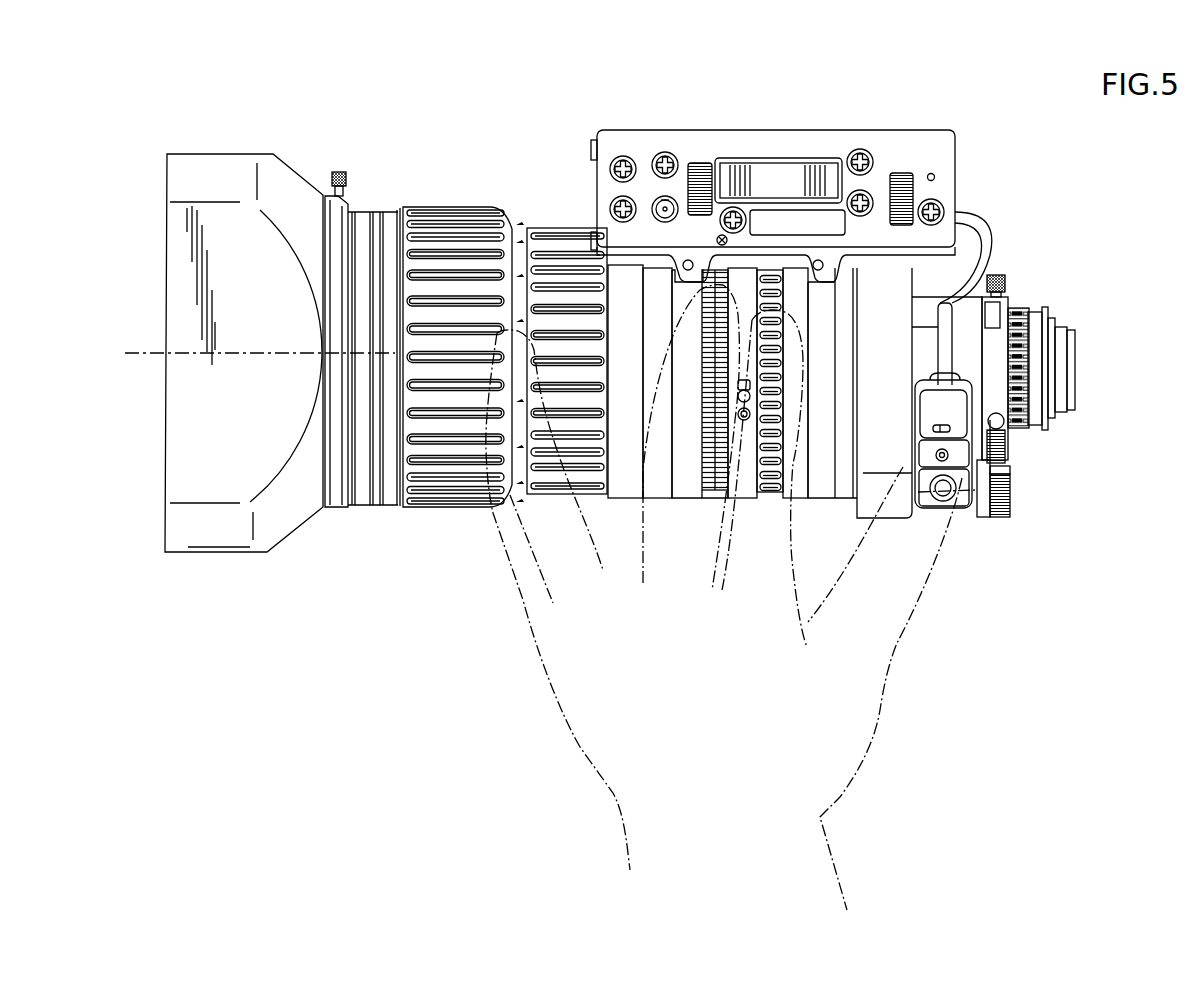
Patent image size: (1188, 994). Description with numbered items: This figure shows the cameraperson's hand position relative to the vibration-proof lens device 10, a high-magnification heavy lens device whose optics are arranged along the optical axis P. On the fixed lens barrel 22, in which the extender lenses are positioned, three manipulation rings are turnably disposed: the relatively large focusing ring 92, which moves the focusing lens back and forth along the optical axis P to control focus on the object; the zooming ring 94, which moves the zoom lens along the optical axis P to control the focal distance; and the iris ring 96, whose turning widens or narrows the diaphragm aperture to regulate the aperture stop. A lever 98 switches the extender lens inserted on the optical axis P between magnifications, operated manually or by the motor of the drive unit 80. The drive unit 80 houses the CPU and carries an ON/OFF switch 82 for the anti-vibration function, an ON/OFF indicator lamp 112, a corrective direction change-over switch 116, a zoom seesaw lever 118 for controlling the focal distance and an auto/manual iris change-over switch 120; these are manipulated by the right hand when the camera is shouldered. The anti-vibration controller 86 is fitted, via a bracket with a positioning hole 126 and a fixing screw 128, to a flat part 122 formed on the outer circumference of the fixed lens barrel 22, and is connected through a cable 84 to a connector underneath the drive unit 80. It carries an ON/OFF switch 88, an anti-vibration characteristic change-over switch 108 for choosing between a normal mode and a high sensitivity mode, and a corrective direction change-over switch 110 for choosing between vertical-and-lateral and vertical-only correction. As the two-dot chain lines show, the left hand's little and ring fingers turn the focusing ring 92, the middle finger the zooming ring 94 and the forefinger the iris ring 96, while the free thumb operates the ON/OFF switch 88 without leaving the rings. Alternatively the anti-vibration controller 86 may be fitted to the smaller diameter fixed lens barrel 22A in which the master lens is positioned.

The vibration-proof lens device 10 is at (414, 186).
The optical axis P is at (148, 357).
The fixed lens barrel 22 is at (687, 467).
The fixed lens barrel 22A is at (1000, 370).
The drive unit 80 is at (857, 130).
The ON/OFF switch 82 is at (934, 202).
The cable 84 is at (993, 247).
The anti-vibration controller 86 is at (913, 510).
The ON/OFF switch 88 is at (980, 500).
The focusing ring 92 is at (486, 236).
The zooming ring 94 is at (700, 493).
The iris ring 96 is at (760, 493).
The lever 98 is at (1004, 457).
The anti-vibration characteristic change-over switch 108 is at (919, 475).
The corrective direction change-over switch 110 is at (1005, 437).
The ON/OFF indicator lamp 112 is at (934, 176).
The corrective direction change-over switch 116 is at (907, 177).
The zoom seesaw lever 118 is at (763, 178).
The auto/manual iris change-over switch 120 is at (702, 167).
The flat part 122 is at (945, 507).
The positioning hole 126 is at (1000, 470).
The fixing screw 128 is at (1010, 497).